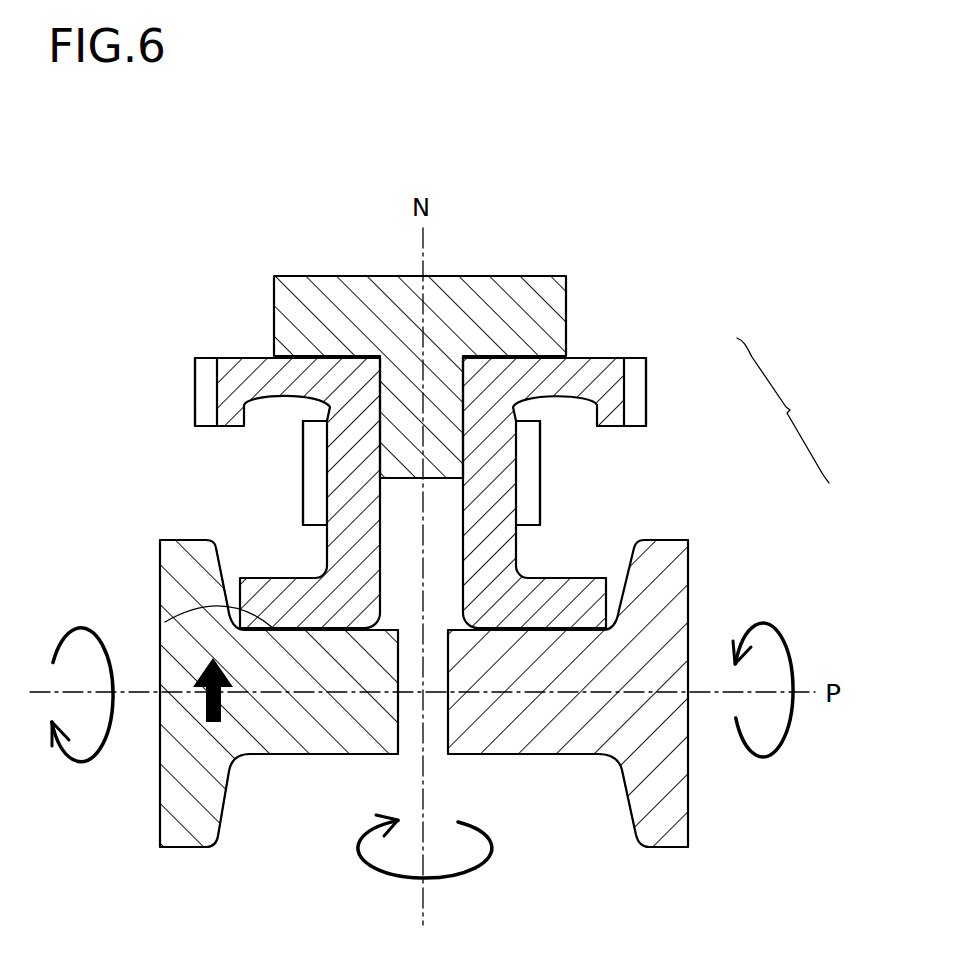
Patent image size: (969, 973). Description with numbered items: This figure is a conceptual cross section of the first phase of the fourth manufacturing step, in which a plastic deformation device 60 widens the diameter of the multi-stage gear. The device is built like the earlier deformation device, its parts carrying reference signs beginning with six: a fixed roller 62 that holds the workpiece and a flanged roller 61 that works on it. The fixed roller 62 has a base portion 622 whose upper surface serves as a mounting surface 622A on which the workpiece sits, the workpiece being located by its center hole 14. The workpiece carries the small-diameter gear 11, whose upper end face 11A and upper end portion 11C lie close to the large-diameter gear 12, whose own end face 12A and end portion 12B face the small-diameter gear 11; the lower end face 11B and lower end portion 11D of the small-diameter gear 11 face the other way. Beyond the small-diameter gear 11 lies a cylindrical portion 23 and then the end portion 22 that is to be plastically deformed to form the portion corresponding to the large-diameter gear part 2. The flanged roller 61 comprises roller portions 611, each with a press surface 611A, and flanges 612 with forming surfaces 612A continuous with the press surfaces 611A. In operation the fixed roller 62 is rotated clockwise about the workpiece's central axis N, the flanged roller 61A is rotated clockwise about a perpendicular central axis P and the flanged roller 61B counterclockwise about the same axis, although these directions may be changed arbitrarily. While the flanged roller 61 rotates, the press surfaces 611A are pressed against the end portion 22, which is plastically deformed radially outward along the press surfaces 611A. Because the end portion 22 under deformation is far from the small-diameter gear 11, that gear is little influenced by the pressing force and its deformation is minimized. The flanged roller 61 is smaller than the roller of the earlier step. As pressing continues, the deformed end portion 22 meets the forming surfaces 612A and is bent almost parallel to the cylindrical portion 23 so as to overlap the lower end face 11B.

The large-diameter gear part 2 is at (236, 368).
The small-diameter gear 11 is at (525, 507).
The upper end face of the small-diameter gear 11A is at (527, 412).
The lower end face of the small-diameter gear 11B is at (312, 527).
The upper end portion of the small-diameter gear 11C is at (527, 430).
The lower end portion of the small-diameter gear 11D is at (305, 508).
The large-diameter gear 12 is at (200, 390).
The end face of the large-diameter gear 12A is at (619, 425).
The end portion of the large-diameter gear 12B is at (612, 414).
The center hole 14 is at (440, 563).
The end portion 22 is at (607, 597).
The cylindrical portion 23 is at (343, 418).
The plastic deformation device 60 is at (446, 531).
The flanged roller 61 is at (691, 571).
The flanged roller 61A is at (317, 732).
The flanged roller 61B is at (529, 732).
The roller portion 611 is at (260, 737).
The press surface 611A is at (165, 622).
The flange 612 is at (172, 812).
The forming surface 612A is at (220, 563).
The fixed roller 62 is at (464, 340).
The base portion 622 is at (323, 285).
The mounting surface 622A is at (293, 370).